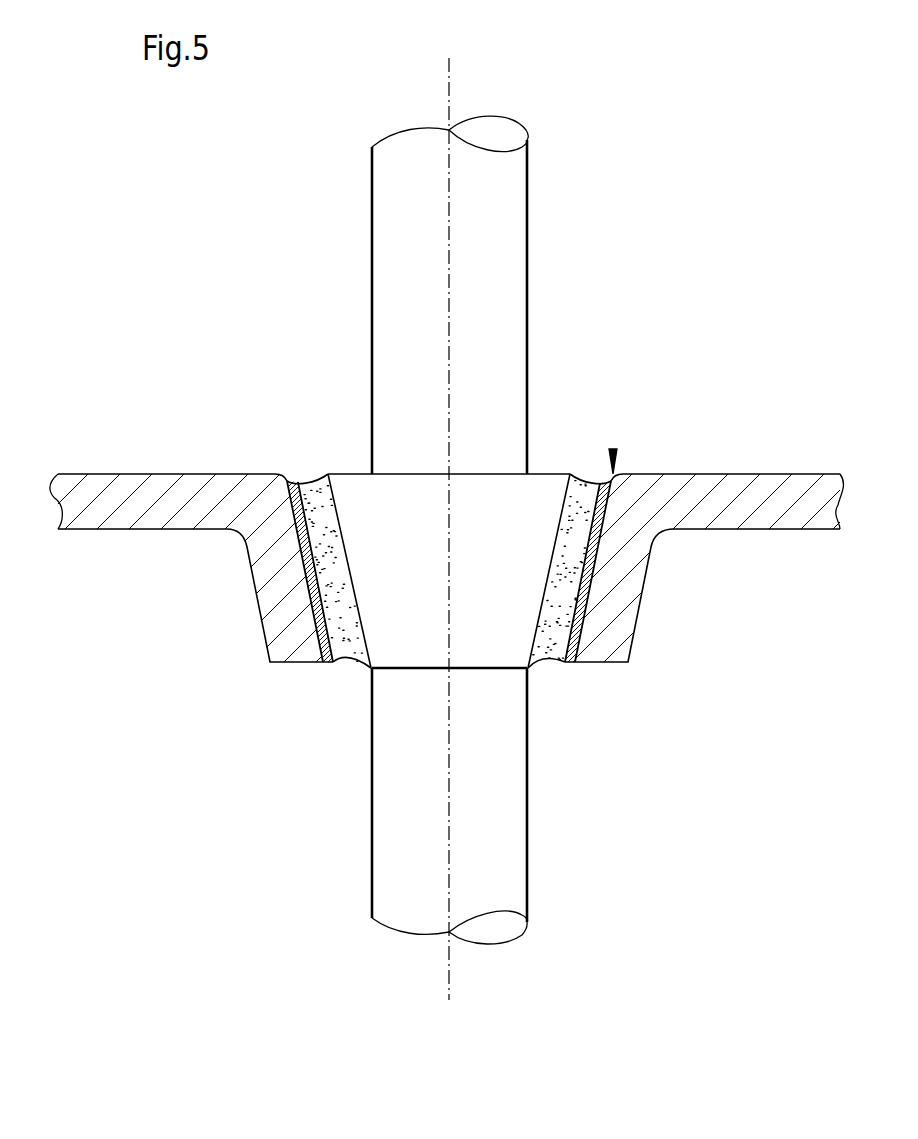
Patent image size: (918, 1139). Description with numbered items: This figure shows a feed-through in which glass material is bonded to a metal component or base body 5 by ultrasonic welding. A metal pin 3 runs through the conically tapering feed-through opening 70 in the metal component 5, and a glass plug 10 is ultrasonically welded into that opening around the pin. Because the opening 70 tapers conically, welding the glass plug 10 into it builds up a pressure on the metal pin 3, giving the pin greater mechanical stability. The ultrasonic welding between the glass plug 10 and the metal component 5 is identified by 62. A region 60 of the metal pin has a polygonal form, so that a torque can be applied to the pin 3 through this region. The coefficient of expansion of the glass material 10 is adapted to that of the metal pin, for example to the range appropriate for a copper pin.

The metal pin 3 is at (505, 252).
The metal component 5 is at (728, 513).
The region of the metal pin 60 is at (540, 498).
The glass plug 10 is at (543, 662).
The ultrasonic welding 62 is at (567, 662).
The feed-through opening 70 is at (618, 449).